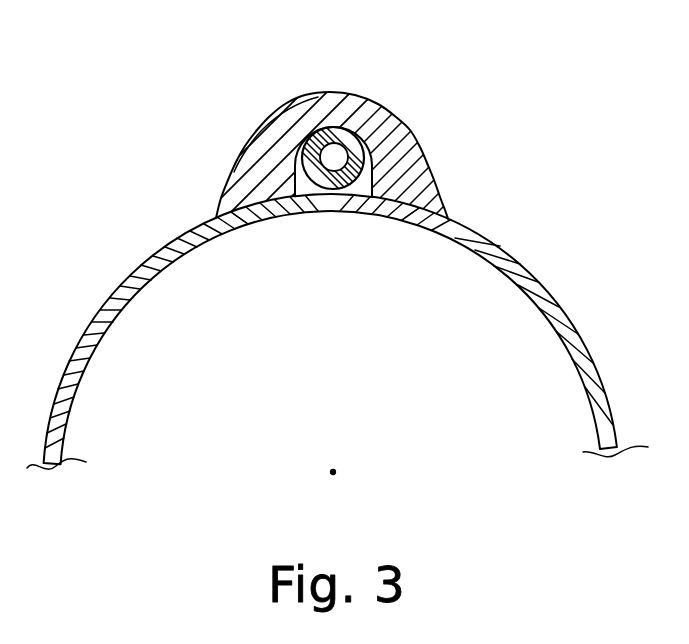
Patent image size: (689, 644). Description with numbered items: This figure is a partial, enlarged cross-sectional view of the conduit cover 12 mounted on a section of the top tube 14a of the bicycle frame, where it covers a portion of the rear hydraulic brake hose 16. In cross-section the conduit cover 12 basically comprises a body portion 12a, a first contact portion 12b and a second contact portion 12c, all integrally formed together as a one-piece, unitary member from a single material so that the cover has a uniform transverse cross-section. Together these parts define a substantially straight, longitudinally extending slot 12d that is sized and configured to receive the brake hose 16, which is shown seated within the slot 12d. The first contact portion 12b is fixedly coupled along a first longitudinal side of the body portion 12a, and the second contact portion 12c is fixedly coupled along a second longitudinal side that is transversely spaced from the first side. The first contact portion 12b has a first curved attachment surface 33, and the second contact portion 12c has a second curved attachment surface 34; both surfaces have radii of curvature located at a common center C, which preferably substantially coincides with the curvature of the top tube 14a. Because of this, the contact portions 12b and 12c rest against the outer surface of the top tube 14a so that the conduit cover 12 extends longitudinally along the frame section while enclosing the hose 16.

The conduit cover 12 is at (411, 131).
The body portion 12a is at (332, 100).
The first contact portion 12b is at (233, 193).
The second contact portion 12c is at (413, 165).
The longitudinally extending slot 12d is at (310, 193).
The top tube 14a is at (533, 274).
The rear hydraulic brake hose 16 is at (357, 125).
The first curved attachment surface 33 is at (250, 205).
The second curved attachment surface 34 is at (410, 207).
The center C is at (342, 458).